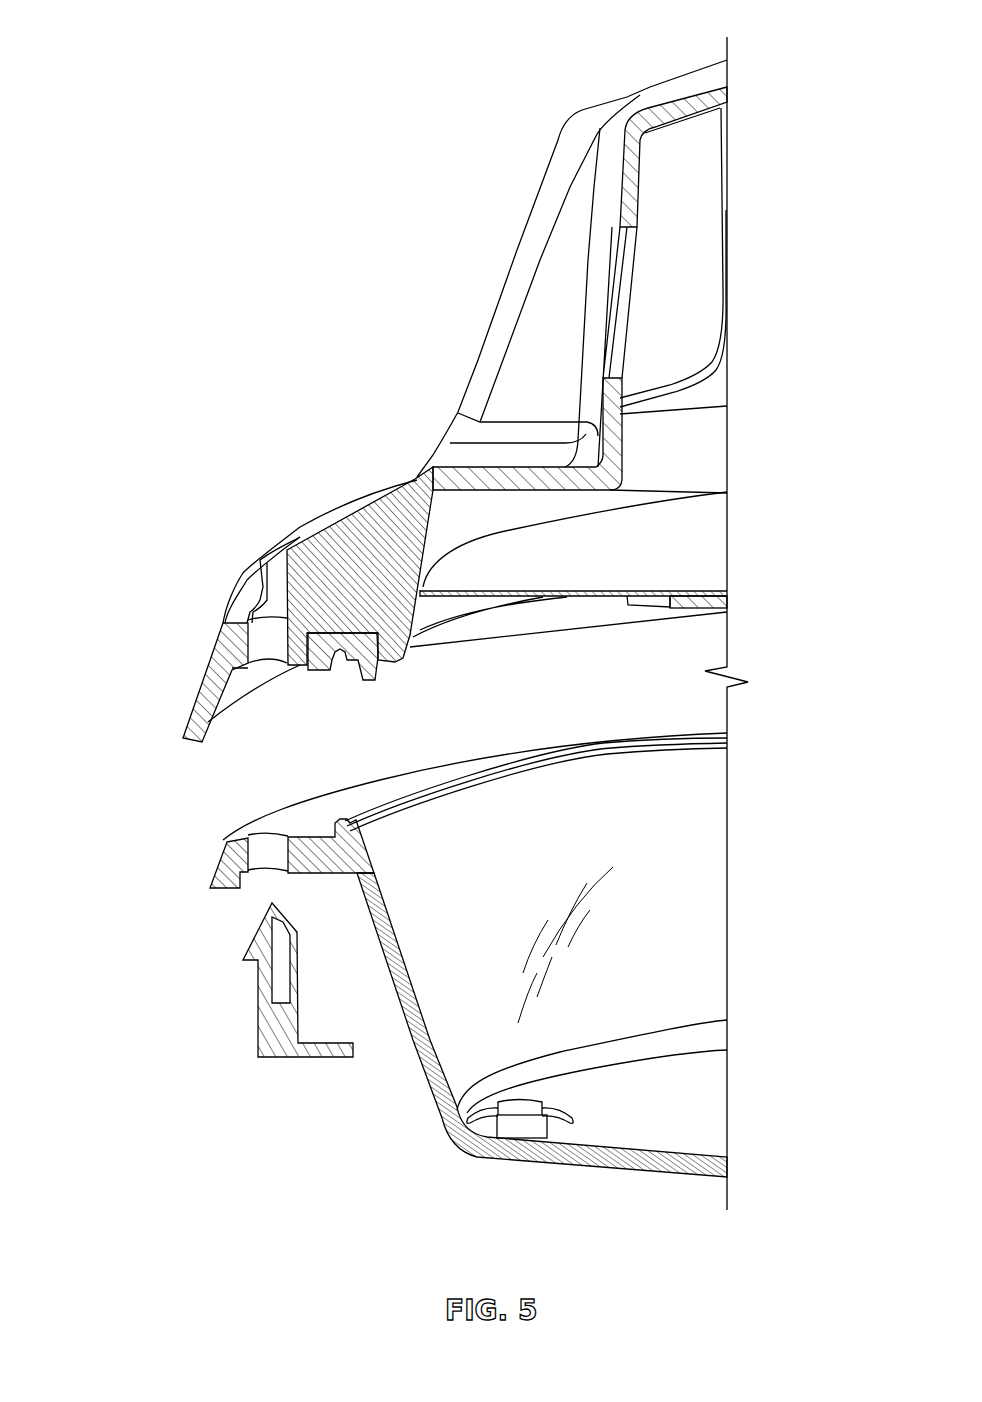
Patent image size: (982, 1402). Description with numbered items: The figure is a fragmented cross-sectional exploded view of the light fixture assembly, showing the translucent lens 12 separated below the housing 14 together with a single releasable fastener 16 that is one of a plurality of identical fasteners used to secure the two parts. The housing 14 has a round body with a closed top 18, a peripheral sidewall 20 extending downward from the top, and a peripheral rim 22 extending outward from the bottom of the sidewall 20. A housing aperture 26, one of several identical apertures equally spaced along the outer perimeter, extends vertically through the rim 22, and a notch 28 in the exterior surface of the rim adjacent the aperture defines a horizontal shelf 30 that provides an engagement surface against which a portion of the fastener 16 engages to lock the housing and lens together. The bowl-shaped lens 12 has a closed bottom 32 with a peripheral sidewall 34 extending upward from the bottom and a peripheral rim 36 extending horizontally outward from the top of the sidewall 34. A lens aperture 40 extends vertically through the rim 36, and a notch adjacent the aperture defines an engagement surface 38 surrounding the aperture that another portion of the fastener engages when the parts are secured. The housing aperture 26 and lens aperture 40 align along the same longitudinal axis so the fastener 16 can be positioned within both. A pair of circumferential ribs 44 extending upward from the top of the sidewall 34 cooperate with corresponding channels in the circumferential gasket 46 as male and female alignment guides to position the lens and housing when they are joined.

The translucent lens 12 is at (490, 1188).
The housing 14 is at (124, 281).
The releasable fastener 16 is at (212, 1008).
The closed top 18 is at (671, 77).
The peripheral sidewall 20 is at (553, 188).
The peripheral rim 22 is at (337, 517).
The housing aperture 26 is at (263, 647).
The notch 28 is at (253, 592).
The horizontal shelf 30 is at (230, 617).
The closed bottom 32 is at (592, 1000).
The peripheral sidewall 34 is at (427, 1070).
The peripheral rim 36 is at (298, 818).
The engagement surface 38 is at (317, 873).
The lens aperture 40 is at (258, 850).
The circumferential rib 44 is at (443, 780).
The circumferential gasket 46 is at (368, 660).